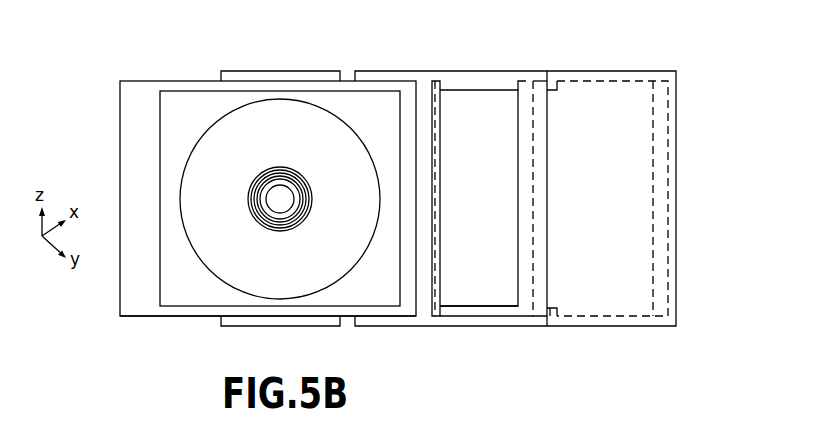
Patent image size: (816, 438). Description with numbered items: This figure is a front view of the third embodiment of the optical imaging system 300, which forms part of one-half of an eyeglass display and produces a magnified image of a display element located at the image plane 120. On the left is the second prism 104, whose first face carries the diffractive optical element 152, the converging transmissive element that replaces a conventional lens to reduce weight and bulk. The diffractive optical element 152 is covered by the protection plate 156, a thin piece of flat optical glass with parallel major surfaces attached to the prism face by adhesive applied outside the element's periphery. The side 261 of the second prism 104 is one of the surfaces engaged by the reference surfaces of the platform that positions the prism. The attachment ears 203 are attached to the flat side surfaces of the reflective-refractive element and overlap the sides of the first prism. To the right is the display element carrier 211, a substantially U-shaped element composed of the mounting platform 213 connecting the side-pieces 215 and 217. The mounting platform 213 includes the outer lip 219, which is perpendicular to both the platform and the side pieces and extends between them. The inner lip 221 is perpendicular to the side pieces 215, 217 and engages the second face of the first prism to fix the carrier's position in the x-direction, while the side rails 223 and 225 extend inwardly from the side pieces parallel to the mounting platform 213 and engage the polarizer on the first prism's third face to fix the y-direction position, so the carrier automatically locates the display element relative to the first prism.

The optical imaging system 300 is at (242, 192).
The second prism 104 is at (152, 97).
The diffractive optical element 152 is at (218, 118).
The protection plate 156 is at (187, 308).
The attachment ear 203 is at (313, 71).
The side 261 is at (153, 318).
The side-piece 215 is at (442, 70).
The side-piece 217 is at (483, 327).
The outer lip 219 is at (525, 295).
The inner lip 221 is at (425, 295).
The side rail 223 is at (489, 85).
The side rail 225 is at (463, 310).
The display element carrier 211 is at (576, 42).
The image plane 120 is at (612, 81).
The mounting platform 213 is at (672, 97).